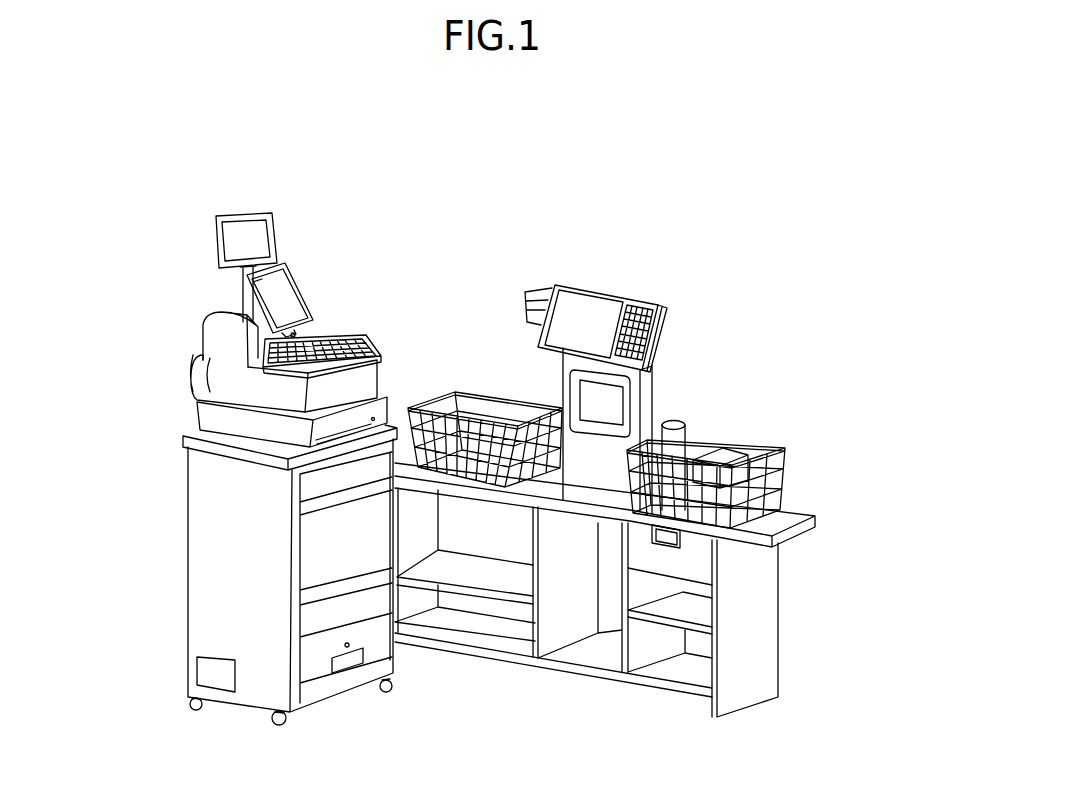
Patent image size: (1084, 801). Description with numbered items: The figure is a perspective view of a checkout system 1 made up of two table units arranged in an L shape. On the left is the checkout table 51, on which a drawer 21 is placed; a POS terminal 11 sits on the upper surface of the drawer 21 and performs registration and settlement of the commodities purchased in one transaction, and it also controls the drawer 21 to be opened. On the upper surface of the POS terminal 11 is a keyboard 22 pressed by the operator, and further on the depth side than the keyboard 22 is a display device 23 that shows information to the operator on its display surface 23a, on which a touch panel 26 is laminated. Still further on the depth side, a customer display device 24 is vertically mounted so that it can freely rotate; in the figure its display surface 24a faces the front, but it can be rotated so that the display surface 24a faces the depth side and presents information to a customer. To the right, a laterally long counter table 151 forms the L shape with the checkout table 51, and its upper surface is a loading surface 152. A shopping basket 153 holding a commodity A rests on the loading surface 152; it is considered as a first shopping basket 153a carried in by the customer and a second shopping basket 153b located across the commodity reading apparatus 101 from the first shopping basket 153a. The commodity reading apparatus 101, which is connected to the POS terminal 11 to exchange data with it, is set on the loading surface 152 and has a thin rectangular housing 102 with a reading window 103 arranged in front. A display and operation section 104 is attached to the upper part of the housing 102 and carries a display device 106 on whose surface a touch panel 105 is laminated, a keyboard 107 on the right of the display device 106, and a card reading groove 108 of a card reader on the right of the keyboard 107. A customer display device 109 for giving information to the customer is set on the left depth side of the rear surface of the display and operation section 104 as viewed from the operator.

The checkout system 1 is at (150, 237).
The POS terminal 11 is at (170, 343).
The drawer 21 is at (207, 417).
The keyboard 22 is at (353, 340).
The display device 23 is at (285, 273).
The display surface 23a is at (297, 307).
The customer display device 24 is at (246, 213).
The display surface 24a is at (233, 227).
The touch panel 26 is at (262, 292).
The checkout table 51 is at (208, 564).
The commodity reading apparatus 101 is at (525, 195).
The housing 102 is at (585, 455).
The reading window 103 is at (590, 400).
The display and operation section 104 is at (572, 292).
The touch panel 105 is at (597, 303).
The display device 106 is at (621, 302).
The keyboard 107 is at (657, 300).
The card reading groove 108 is at (663, 303).
The customer display device 109 is at (528, 292).
The counter table 151 is at (767, 640).
The loading surface 152 is at (793, 515).
The shopping basket 153 is at (782, 433).
The first shopping basket 153a is at (785, 453).
The second shopping basket 153b is at (448, 392).
The commodity A is at (677, 423).